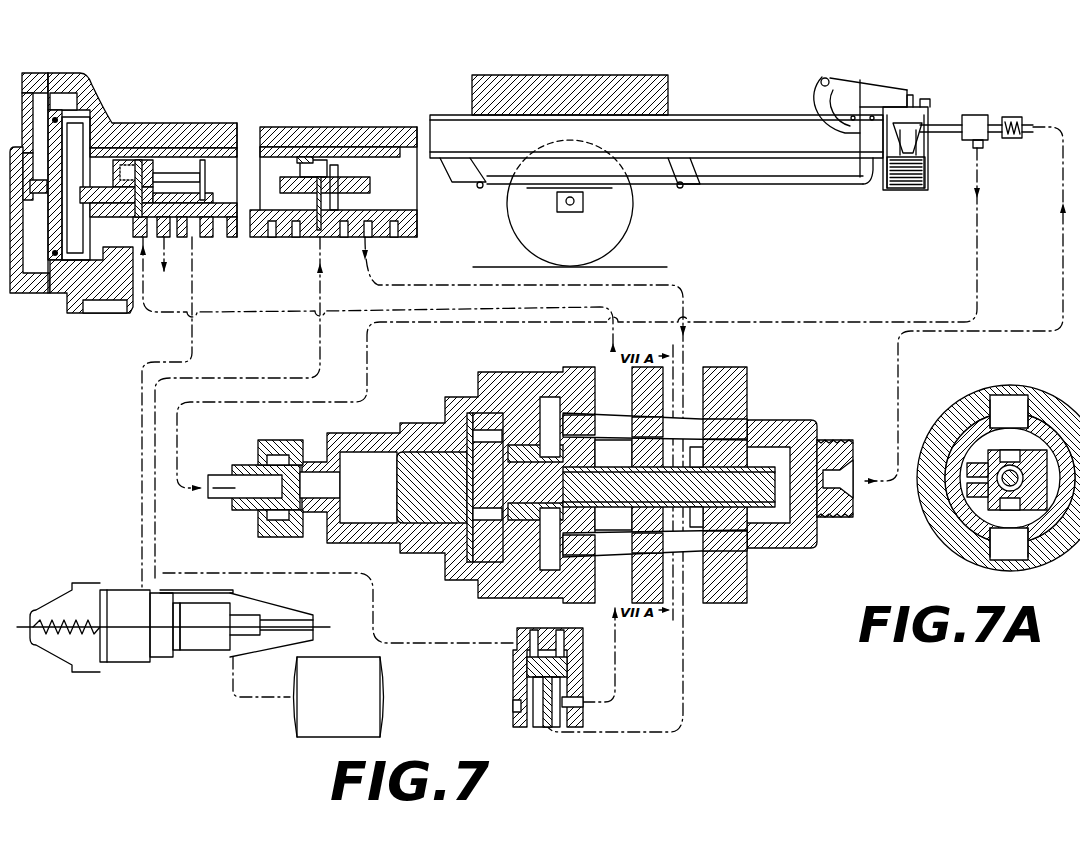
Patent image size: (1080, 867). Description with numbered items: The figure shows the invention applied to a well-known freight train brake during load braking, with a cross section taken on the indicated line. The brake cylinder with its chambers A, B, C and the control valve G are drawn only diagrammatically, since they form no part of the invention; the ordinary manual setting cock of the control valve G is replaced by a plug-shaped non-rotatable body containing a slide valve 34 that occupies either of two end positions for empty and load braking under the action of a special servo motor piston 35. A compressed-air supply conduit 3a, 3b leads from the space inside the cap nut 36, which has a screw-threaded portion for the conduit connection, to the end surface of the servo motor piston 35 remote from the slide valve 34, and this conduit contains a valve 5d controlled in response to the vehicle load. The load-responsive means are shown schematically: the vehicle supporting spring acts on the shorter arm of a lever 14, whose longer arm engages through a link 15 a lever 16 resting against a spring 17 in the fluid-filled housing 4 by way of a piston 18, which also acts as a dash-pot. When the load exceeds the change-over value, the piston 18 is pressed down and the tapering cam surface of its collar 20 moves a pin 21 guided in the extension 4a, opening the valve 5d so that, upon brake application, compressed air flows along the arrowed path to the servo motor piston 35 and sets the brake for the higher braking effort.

In FIG. 7, the control valve G is at (333, 123).
In FIG. 7, the lever 14 is at (734, 185).
In FIG. 7, the link 15 is at (863, 176).
In FIG. 7, the lever 16 is at (887, 93).
In FIG. 7, the spring 17 is at (921, 191).
In FIG. 7, the piston 18 is at (929, 160).
In FIG. 7, the collar 20 is at (906, 125).
In FIG. 7, the pin 21 is at (952, 127).
In FIG. 7, the housing 4 is at (926, 124).
In FIG. 7, the extension 4a is at (984, 114).
In FIG. 7, the valve 5d is at (1018, 116).
In FIG. 7, the compressed-air supply conduit 3a is at (1034, 136).
In FIG. 7, the compressed-air supply conduit 3b is at (177, 455).
In FIG. 7, the slide valve 34 is at (748, 420).
In FIG. 7A, the slide valve 34 is at (1003, 481).
In FIG. 7, the special servo motor piston 35 is at (423, 500).
In FIG. 7, the cap nut 36 is at (837, 321).
In FIG. 7, the chamber A is at (198, 640).
In FIG. 7, the chamber B is at (163, 637).
In FIG. 7, the chamber C is at (125, 645).